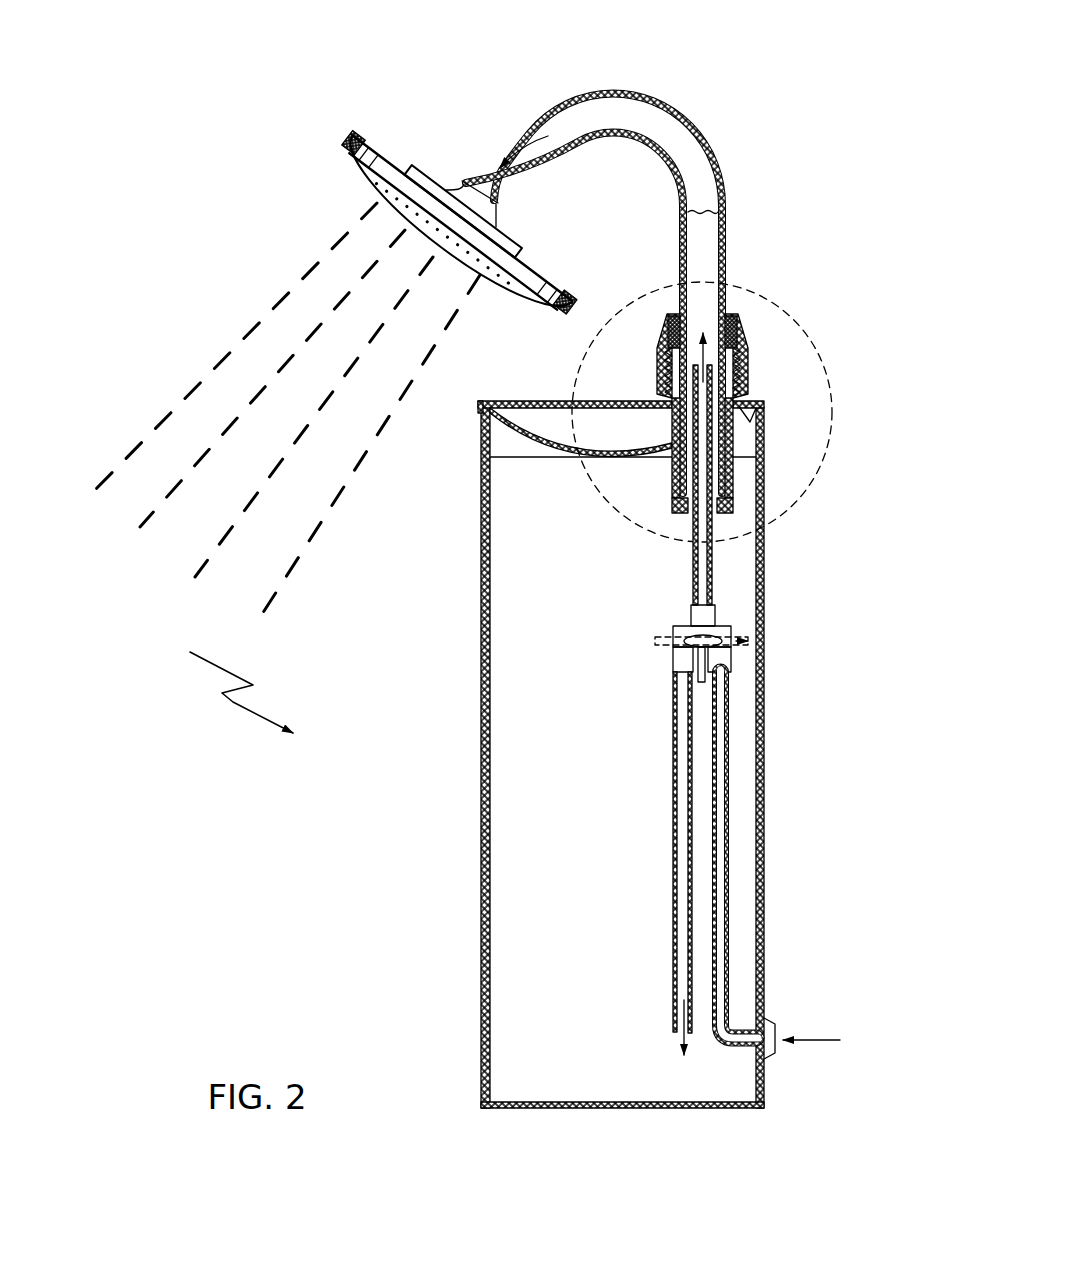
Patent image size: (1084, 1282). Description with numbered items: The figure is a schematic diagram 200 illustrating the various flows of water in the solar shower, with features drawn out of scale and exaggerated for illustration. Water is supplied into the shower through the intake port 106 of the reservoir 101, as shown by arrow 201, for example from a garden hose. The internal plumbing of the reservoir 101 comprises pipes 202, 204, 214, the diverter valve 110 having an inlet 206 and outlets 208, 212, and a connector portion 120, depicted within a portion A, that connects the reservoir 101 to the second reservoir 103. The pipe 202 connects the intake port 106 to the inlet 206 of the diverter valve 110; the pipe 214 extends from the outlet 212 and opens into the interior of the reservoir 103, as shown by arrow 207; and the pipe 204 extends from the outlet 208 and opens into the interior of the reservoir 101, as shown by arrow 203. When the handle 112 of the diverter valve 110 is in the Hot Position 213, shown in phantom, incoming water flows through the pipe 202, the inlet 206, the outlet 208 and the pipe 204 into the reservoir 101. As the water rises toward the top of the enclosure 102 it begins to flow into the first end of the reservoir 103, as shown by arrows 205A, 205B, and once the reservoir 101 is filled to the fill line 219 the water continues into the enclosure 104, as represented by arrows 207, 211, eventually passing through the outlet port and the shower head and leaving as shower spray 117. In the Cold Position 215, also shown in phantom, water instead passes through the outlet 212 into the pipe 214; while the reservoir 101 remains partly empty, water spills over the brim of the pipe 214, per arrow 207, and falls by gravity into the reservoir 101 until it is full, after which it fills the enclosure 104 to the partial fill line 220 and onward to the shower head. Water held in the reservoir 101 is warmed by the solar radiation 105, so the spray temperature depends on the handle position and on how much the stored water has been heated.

The schematic diagram 200 is at (718, 30).
The reservoir 101 is at (327, 893).
The enclosure 102 is at (480, 903).
The reservoir 103 is at (731, 89).
The enclosure 104 is at (717, 176).
The solar radiation 105 is at (233, 705).
The intake port 106 is at (765, 1060).
The diverter valve 110 is at (677, 627).
The handle 112 is at (705, 680).
The shower spray 117 is at (200, 324).
The connector portion 120 is at (760, 320).
The arrow 201 is at (826, 1040).
The pipe 202 is at (722, 933).
The arrow 203 is at (675, 1030).
The pipe 204 is at (680, 960).
The arrow 205A is at (688, 518).
The arrow 205B is at (716, 520).
The inlet 206 is at (725, 660).
The arrow 207 is at (702, 355).
The outlet 208 is at (680, 657).
The arrow 211 is at (519, 135).
The outlet 212 is at (715, 615).
The position 213 is at (750, 645).
The pipe 214 is at (712, 565).
The position 215 is at (662, 640).
The line 219 is at (518, 461).
The partial fill line 220 is at (704, 209).
The portion A is at (832, 440).